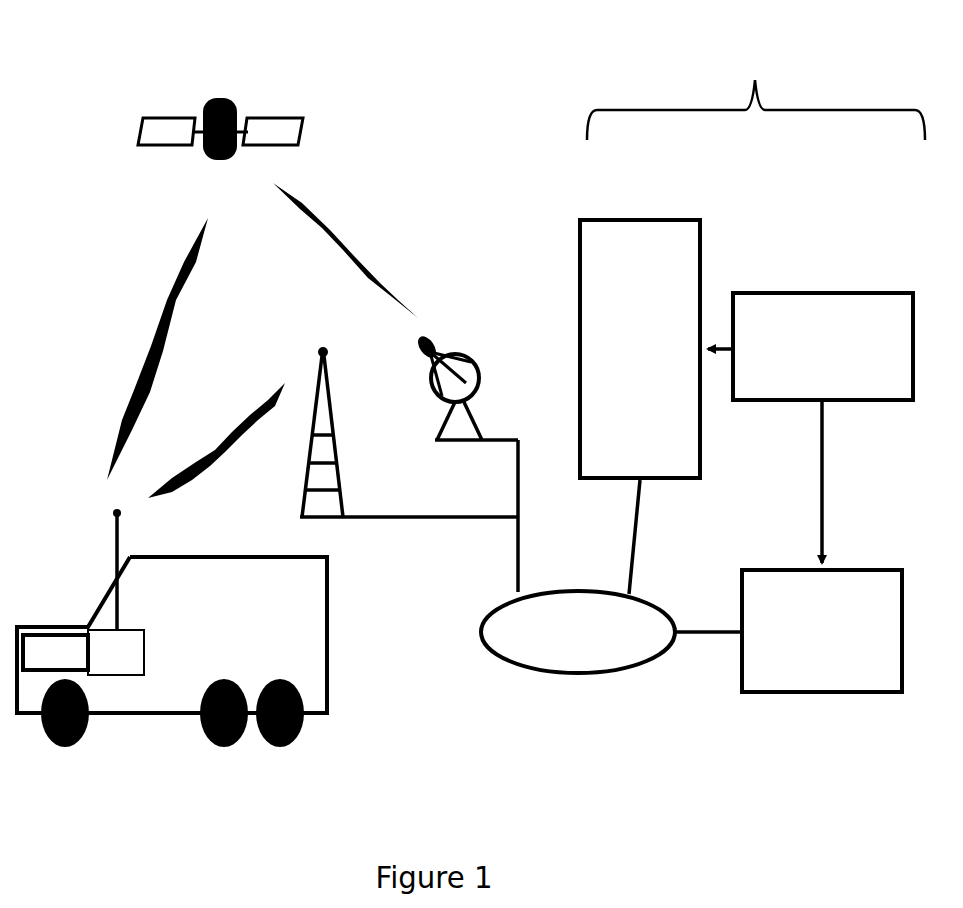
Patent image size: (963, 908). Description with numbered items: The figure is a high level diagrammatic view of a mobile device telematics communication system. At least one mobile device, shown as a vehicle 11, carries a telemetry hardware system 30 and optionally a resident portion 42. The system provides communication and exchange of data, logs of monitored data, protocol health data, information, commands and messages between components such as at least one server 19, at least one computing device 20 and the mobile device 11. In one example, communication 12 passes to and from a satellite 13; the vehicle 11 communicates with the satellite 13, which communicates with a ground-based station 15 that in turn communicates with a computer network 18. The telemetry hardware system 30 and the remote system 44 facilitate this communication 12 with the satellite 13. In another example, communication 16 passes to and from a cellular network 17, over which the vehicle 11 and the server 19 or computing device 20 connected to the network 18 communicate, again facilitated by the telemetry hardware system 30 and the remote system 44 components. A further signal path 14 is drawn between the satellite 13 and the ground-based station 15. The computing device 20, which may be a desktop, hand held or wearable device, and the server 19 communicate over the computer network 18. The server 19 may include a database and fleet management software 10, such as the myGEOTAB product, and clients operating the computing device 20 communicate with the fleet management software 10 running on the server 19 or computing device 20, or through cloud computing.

The fleet management software 10 is at (817, 277).
The vehicle 11 is at (61, 608).
The communication 12 is at (125, 353).
The satellite 13 is at (184, 94).
The satellite signal to ground station 14 is at (380, 182).
The ground-based station 15 is at (466, 328).
The communication 16 is at (244, 394).
The cellular network 17 is at (352, 436).
The computer network 18 is at (600, 716).
The server 19 is at (716, 220).
The computing device 20 is at (787, 704).
The telemetry hardware system 30 is at (116, 592).
The resident portion 42 is at (55, 652).
The remote system 44 is at (756, 95).